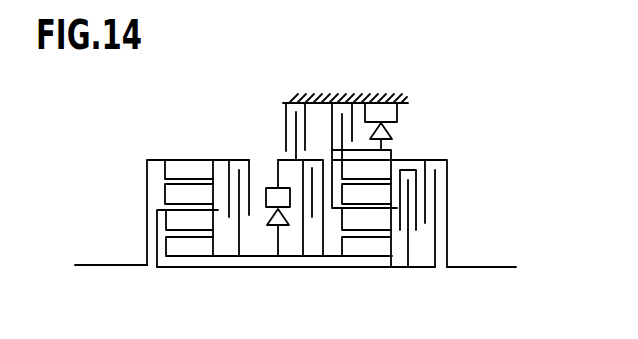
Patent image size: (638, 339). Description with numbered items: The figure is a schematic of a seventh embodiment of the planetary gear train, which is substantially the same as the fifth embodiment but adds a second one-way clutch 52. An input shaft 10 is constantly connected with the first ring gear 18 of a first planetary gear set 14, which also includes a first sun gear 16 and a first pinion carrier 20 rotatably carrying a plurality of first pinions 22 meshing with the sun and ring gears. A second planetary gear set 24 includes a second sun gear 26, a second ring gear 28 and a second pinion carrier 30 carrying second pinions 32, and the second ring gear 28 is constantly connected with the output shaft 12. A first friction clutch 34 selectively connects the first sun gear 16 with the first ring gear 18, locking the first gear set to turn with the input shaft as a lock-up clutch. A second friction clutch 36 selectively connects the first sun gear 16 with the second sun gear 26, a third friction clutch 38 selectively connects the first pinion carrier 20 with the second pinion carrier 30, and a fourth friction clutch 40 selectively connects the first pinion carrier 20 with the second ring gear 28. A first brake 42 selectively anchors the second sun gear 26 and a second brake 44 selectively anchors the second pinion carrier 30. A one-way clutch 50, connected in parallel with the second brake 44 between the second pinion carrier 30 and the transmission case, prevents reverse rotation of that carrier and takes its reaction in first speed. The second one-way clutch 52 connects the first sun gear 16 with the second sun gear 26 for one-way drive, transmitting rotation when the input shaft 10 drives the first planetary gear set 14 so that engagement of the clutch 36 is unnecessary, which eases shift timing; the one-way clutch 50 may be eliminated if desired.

The input shaft 10 is at (108, 267).
The output shaft 12 is at (501, 269).
The first planetary gear set 14 is at (267, 205).
The first sun gear 16 is at (180, 259).
The first ring gear 18 is at (170, 166).
The first pinion carrier 20 is at (160, 225).
The first pinions 22 is at (172, 193).
The second planetary gear set 24 is at (385, 211).
The second sun gear 26 is at (353, 253).
The second ring gear 28 is at (388, 167).
The second pinion carrier 30 is at (338, 209).
The second pinions 32 is at (375, 224).
The first friction clutch 34 is at (241, 158).
The second friction clutch 36 is at (306, 222).
The third friction clutch 38 is at (401, 232).
The fourth friction clutch 40 is at (457, 215).
The first brake 42 is at (306, 93).
The second brake 44 is at (358, 93).
The one-way clutch 50 is at (399, 105).
The second one-way clutch 52 is at (269, 228).